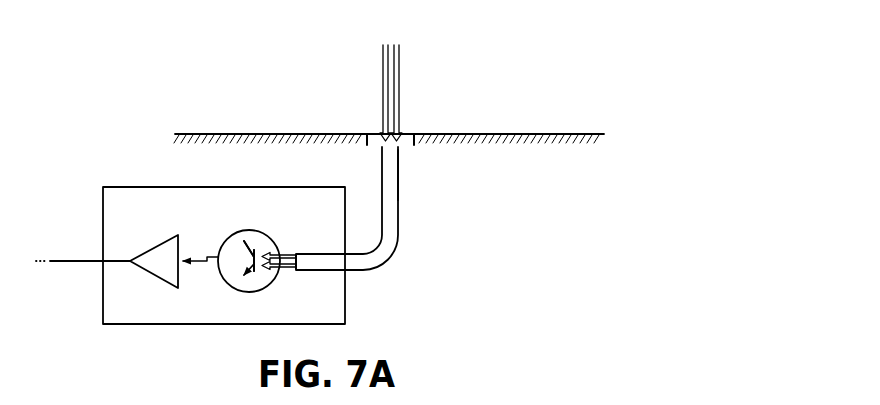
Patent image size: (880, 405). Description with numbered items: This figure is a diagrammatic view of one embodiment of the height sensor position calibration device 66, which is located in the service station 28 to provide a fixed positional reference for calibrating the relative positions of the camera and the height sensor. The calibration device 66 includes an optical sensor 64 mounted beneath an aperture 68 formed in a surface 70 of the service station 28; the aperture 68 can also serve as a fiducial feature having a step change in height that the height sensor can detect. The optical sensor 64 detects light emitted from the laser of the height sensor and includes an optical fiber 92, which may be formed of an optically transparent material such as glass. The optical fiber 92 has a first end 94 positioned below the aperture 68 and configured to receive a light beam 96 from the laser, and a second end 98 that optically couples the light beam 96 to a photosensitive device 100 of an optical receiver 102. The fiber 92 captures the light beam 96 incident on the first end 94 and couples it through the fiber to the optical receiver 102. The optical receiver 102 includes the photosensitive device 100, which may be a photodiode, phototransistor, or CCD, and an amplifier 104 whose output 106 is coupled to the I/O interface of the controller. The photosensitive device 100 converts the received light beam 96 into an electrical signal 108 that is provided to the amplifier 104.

The service station 28 is at (548, 132).
The optical sensor 64 is at (83, 163).
The height sensor position calibration device 66 is at (307, 51).
The aperture 68 is at (369, 147).
The surface 70 is at (480, 133).
The optical fiber 92 is at (391, 263).
The first end 94 is at (400, 151).
The light beam 96 is at (383, 83).
The second end 98 is at (300, 270).
The photosensitive device 100 is at (272, 238).
The optical receiver 102 is at (158, 187).
The amplifier 104 is at (162, 244).
The output 106 is at (65, 261).
The electrical signal 108 is at (207, 257).